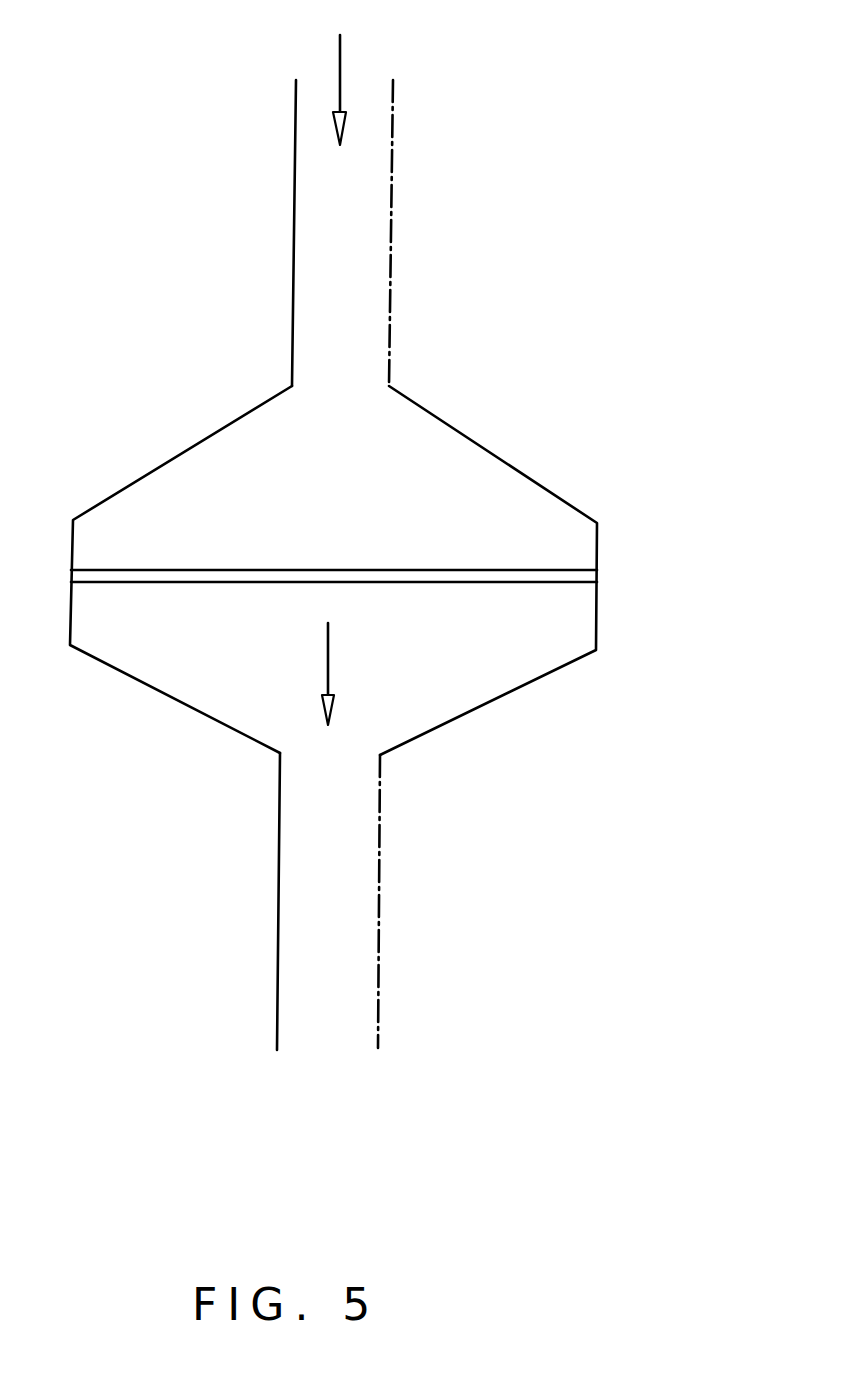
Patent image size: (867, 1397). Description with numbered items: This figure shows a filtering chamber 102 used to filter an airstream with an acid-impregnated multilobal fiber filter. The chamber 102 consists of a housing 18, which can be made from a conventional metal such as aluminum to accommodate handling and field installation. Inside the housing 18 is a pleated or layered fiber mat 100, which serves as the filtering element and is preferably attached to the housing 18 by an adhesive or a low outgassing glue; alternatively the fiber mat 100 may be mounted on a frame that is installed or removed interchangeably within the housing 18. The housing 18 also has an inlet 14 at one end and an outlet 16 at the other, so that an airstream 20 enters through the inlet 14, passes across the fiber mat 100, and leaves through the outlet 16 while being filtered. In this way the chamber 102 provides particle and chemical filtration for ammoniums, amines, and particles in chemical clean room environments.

The inlet 14 is at (311, 70).
The outlet 16 is at (358, 1050).
The housing 18 is at (176, 455).
The airstream 20 is at (341, 70).
The fiber mat 100 is at (187, 568).
The filtering chamber 102 is at (397, 567).